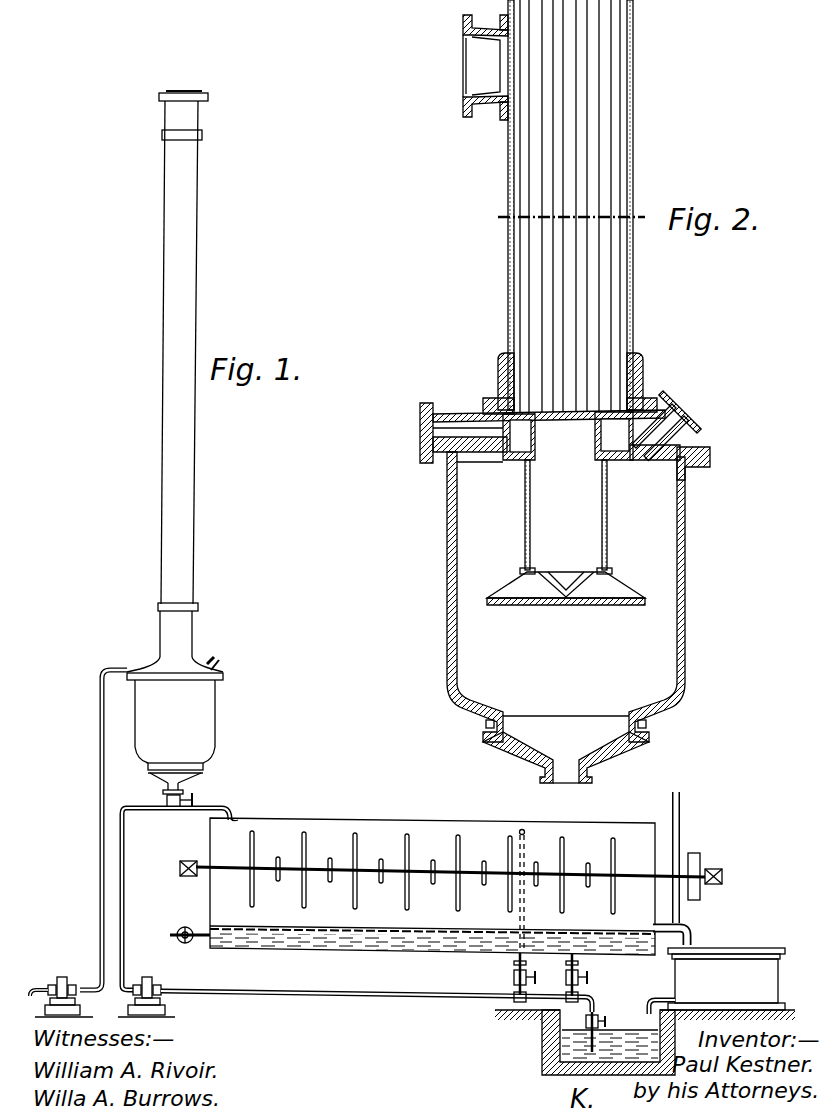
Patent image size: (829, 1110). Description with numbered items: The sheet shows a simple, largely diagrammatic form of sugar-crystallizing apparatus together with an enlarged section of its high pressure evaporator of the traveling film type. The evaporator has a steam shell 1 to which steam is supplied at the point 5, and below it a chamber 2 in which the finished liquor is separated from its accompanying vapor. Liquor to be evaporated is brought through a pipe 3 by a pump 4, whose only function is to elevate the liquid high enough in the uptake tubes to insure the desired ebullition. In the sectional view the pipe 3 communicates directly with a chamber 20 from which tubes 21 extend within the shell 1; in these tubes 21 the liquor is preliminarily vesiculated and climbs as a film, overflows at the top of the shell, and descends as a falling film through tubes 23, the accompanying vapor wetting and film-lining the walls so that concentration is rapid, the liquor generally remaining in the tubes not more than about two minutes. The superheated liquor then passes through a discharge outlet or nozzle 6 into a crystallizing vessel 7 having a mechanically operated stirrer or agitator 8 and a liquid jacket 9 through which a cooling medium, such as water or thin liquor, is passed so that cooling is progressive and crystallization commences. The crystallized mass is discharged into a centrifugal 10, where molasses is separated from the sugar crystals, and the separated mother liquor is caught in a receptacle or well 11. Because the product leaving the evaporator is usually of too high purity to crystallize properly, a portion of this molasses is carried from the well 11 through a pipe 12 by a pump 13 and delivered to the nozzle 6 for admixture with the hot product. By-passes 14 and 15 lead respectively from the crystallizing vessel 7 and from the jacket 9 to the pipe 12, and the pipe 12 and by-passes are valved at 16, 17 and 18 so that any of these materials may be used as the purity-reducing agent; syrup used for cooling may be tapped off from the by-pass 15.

In FIG. 1, the steam shell 1 is at (190, 481).
In FIG. 2, the steam shell 1 is at (633, 268).
In FIG. 1, the chamber 2 is at (208, 727).
In FIG. 2, the chamber 2 is at (458, 625).
In FIG. 1, the pipe 3 is at (101, 753).
In FIG. 1, the pump 4 is at (62, 977).
In FIG. 2, the steam supply point 5 is at (485, 67).
In FIG. 1, the discharge outlet or nozzle 6 is at (232, 812).
In FIG. 1, the crystallizing vessel 7 is at (442, 823).
In FIG. 1, the stirrer or agitator 8 is at (353, 843).
In FIG. 1, the liquid jacket 9 is at (300, 946).
In FIG. 1, the centrifugal 10 is at (726, 958).
In FIG. 1, the receptacle or well 11 is at (572, 1075).
In FIG. 1, the pipe 12 is at (348, 1000).
In FIG. 1, the pump 13 is at (150, 977).
In FIG. 1, the by-pass 14 is at (516, 962).
In FIG. 1, the by-pass 15 is at (578, 962).
In FIG. 1, the valve 16 is at (598, 1014).
In FIG. 1, the valve 17 is at (512, 980).
In FIG. 1, the valve 18 is at (564, 978).
In FIG. 2, the chamber 20 is at (515, 440).
In FIG. 2, the tubes 21 is at (520, 326).
In FIG. 2, the tubes 23 is at (550, 30).